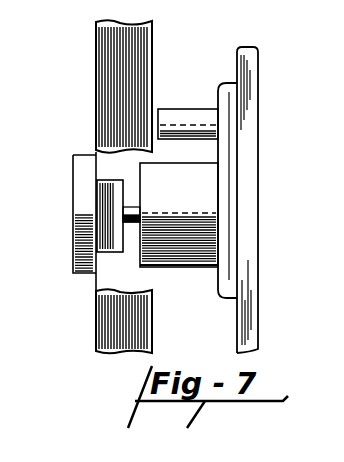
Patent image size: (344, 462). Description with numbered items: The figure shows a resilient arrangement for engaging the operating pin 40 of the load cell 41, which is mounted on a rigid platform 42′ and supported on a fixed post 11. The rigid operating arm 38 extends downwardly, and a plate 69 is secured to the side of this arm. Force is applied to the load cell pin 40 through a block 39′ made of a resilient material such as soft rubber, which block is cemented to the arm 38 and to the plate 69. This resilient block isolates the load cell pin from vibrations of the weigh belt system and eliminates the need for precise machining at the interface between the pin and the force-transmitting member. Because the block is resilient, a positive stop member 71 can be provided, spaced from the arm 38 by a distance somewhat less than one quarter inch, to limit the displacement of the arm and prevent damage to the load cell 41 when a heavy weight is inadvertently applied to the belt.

The post 11 is at (258, 102).
The operating arm 38 is at (95, 37).
The block 39′ is at (103, 195).
The operating pin 40 is at (130, 207).
The load cell 41 is at (175, 260).
The platform 42′ is at (229, 174).
The plate 69 is at (78, 155).
The stop member 71 is at (194, 108).